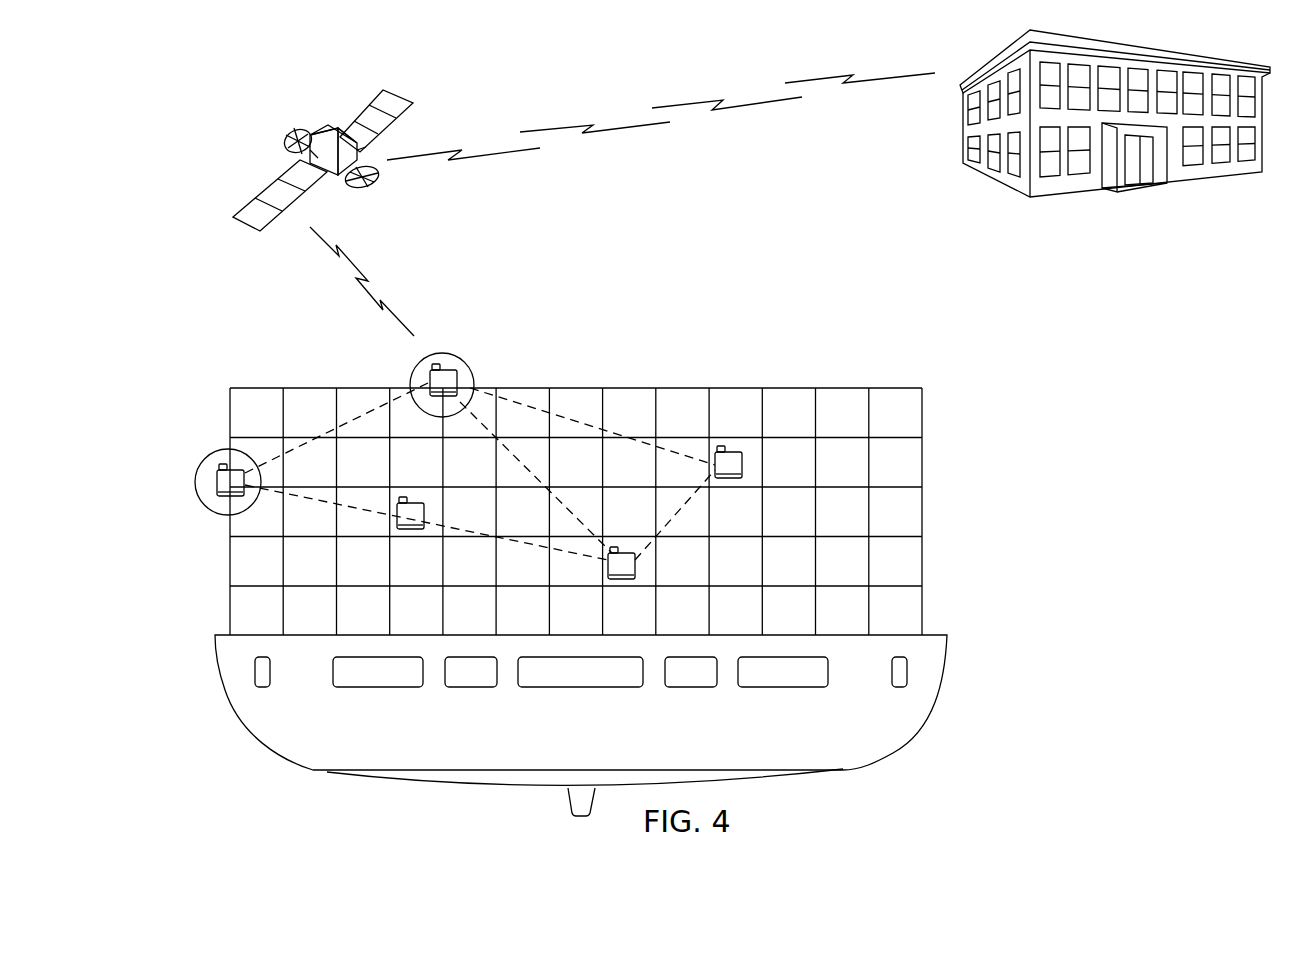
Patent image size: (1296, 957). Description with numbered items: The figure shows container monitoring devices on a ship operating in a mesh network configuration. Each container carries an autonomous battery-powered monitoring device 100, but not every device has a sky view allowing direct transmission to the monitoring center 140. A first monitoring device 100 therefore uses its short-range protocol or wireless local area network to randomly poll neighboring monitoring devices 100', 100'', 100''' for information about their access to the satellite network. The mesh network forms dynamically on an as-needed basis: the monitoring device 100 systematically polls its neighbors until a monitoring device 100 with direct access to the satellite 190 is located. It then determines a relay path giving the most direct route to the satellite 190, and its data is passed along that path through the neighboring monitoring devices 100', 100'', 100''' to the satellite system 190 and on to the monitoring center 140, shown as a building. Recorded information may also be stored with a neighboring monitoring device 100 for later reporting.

The satellite system 190 is at (328, 130).
The monitoring center 140 is at (960, 153).
The monitoring device 100 is at (470, 376).
The neighboring monitoring device 100' is at (745, 408).
The neighboring monitoring device 100'' is at (522, 562).
The neighboring monitoring device 100''' is at (198, 482).